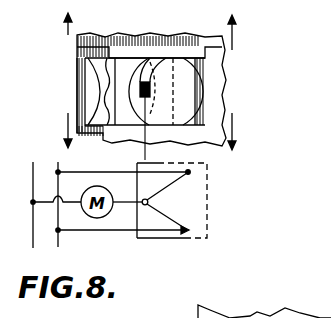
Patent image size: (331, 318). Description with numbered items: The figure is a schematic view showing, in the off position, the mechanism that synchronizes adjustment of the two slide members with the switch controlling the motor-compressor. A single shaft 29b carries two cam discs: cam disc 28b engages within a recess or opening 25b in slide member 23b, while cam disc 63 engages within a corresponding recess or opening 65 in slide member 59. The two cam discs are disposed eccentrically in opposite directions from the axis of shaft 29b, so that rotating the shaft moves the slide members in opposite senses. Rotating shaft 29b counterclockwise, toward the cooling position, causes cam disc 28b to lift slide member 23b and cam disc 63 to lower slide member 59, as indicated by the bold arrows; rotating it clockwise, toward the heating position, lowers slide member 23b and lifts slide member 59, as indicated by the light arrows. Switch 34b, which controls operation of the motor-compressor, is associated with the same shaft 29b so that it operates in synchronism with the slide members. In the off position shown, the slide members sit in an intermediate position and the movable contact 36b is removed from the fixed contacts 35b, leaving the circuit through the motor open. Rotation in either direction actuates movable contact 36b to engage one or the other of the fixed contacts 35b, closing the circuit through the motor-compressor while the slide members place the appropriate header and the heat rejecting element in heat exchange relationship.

The recess or opening 65 is at (78, 58).
The slide member 59 is at (80, 62).
The cam disc 63 is at (90, 97).
The recess or opening 25b is at (146, 47).
The cam disc 28b is at (197, 86).
The slide member 23b is at (222, 113).
The shaft 29b is at (142, 143).
The fixed contacts 35b is at (190, 172).
The movable contact 36b is at (190, 198).
The switch 34b is at (197, 237).